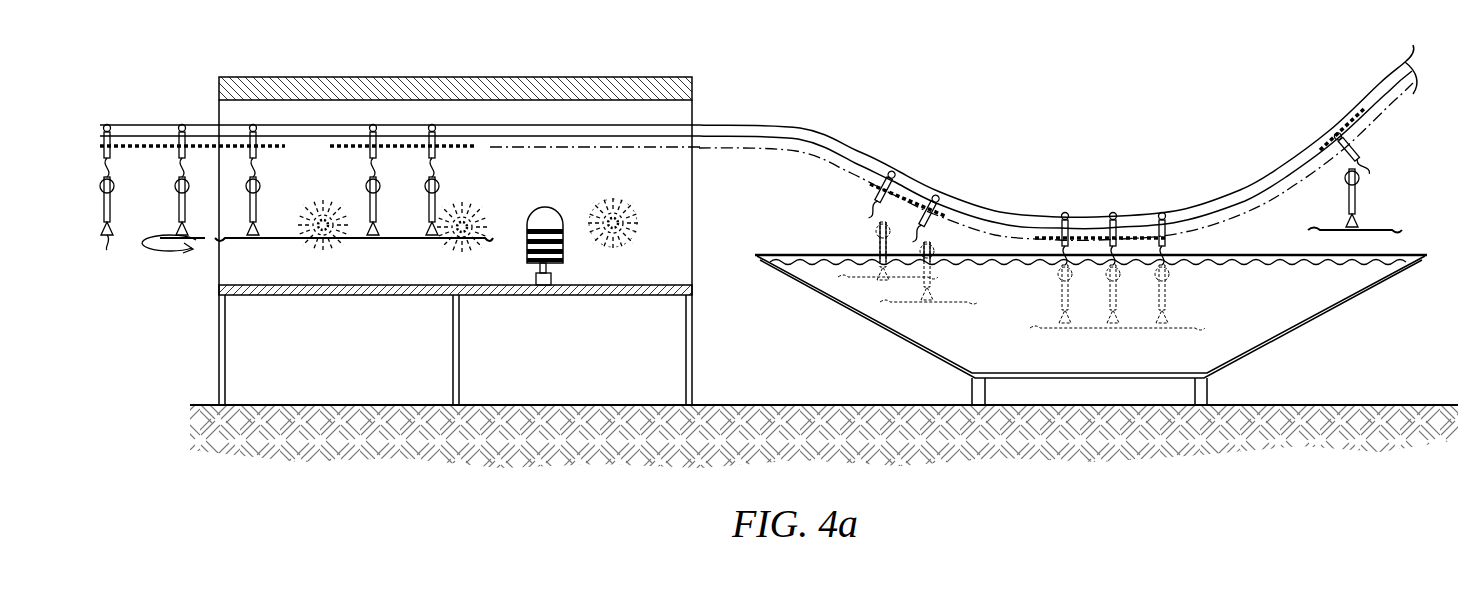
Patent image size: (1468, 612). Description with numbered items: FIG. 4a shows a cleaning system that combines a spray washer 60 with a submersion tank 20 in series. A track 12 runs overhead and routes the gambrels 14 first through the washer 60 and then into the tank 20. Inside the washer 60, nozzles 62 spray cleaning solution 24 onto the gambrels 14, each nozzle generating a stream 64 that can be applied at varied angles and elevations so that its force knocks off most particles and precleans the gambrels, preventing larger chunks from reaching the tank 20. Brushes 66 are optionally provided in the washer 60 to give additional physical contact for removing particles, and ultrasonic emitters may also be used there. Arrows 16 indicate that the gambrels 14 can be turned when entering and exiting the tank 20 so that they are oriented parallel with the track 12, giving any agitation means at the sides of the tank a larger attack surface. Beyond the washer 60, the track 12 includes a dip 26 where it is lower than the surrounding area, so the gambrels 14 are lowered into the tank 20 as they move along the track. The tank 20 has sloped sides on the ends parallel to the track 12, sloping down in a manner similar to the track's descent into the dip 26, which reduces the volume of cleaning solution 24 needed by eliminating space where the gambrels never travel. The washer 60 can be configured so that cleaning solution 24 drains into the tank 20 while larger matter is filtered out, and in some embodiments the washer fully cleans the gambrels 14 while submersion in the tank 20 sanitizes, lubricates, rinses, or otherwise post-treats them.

The track 12 is at (819, 136).
The gambrels 14 is at (107, 250).
The arrows 16 is at (170, 255).
The tank 20 is at (1308, 318).
The cleaning solution 24 is at (1240, 307).
The dip 26 is at (1238, 196).
The gambrel washer 60 is at (424, 77).
The nozzles 62 is at (615, 213).
The stream 64 is at (645, 236).
The brushes 66 is at (545, 207).